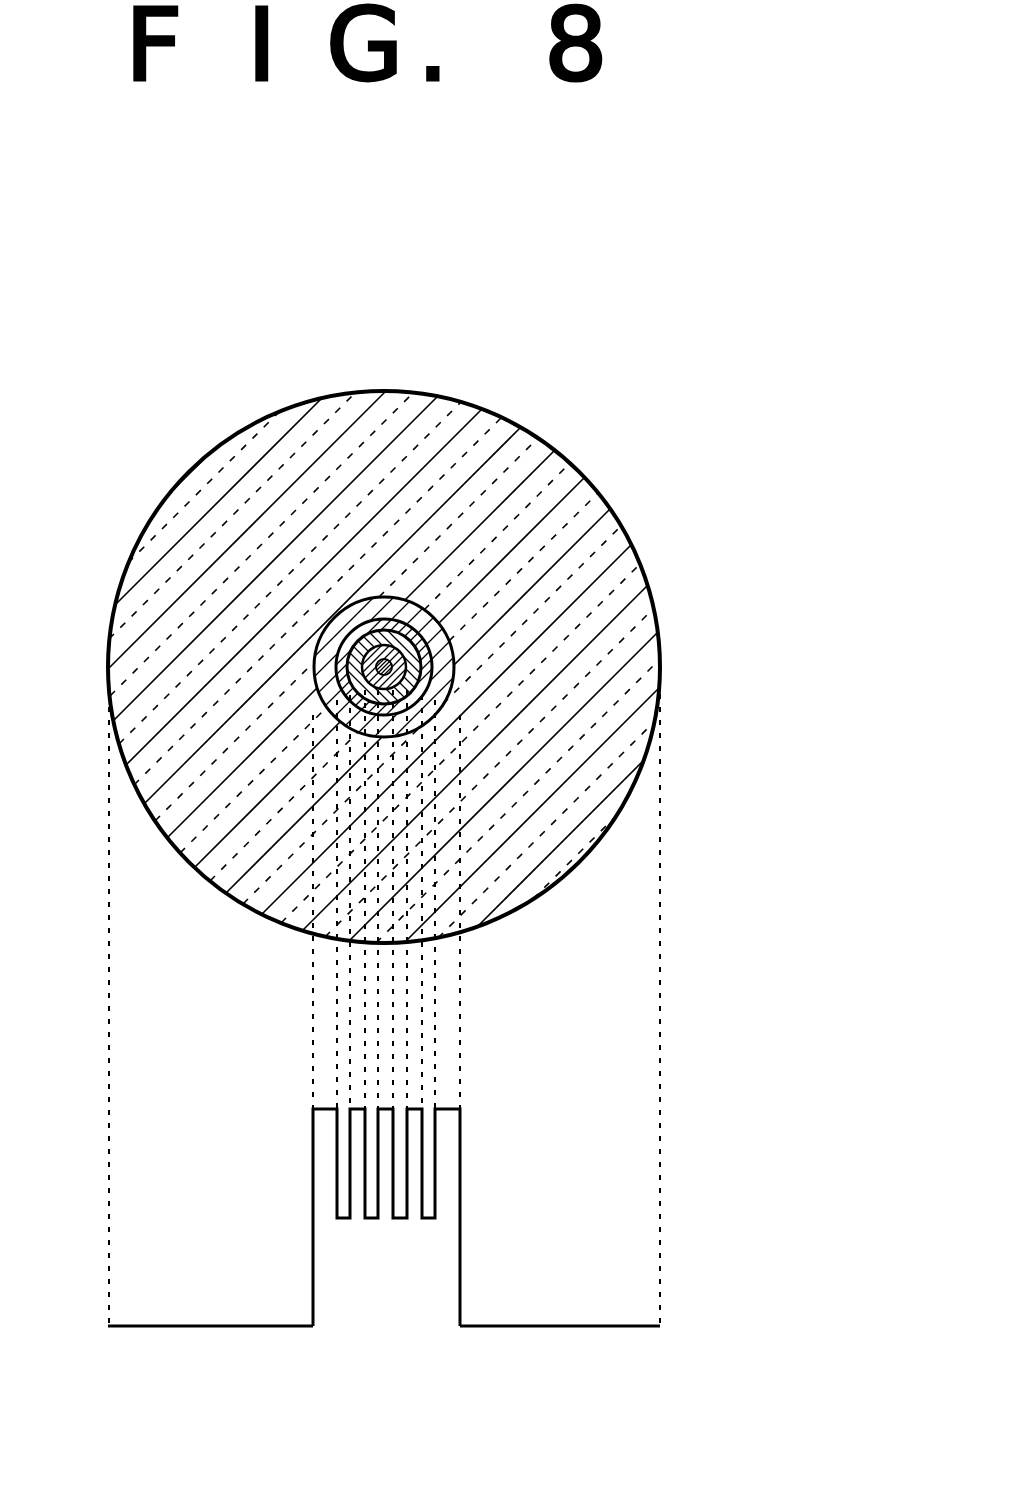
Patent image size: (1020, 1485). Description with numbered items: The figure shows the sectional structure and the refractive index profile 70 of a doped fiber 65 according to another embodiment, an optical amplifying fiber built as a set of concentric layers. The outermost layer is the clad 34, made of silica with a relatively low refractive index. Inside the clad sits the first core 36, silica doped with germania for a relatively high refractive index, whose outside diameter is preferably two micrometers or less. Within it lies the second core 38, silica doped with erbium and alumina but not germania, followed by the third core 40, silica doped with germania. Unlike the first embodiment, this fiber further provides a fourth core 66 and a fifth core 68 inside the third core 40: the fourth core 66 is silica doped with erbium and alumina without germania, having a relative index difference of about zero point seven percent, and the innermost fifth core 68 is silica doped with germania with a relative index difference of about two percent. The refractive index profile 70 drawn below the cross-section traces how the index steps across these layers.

The doped fiber 65 is at (414, 834).
The clad 34 is at (596, 492).
The first core 36 is at (330, 620).
The second core 38 is at (342, 650).
The third core 40 is at (424, 656).
The fourth core 66 is at (407, 670).
The fifth core 68 is at (362, 668).
The refractive index profile 70 is at (316, 1181).